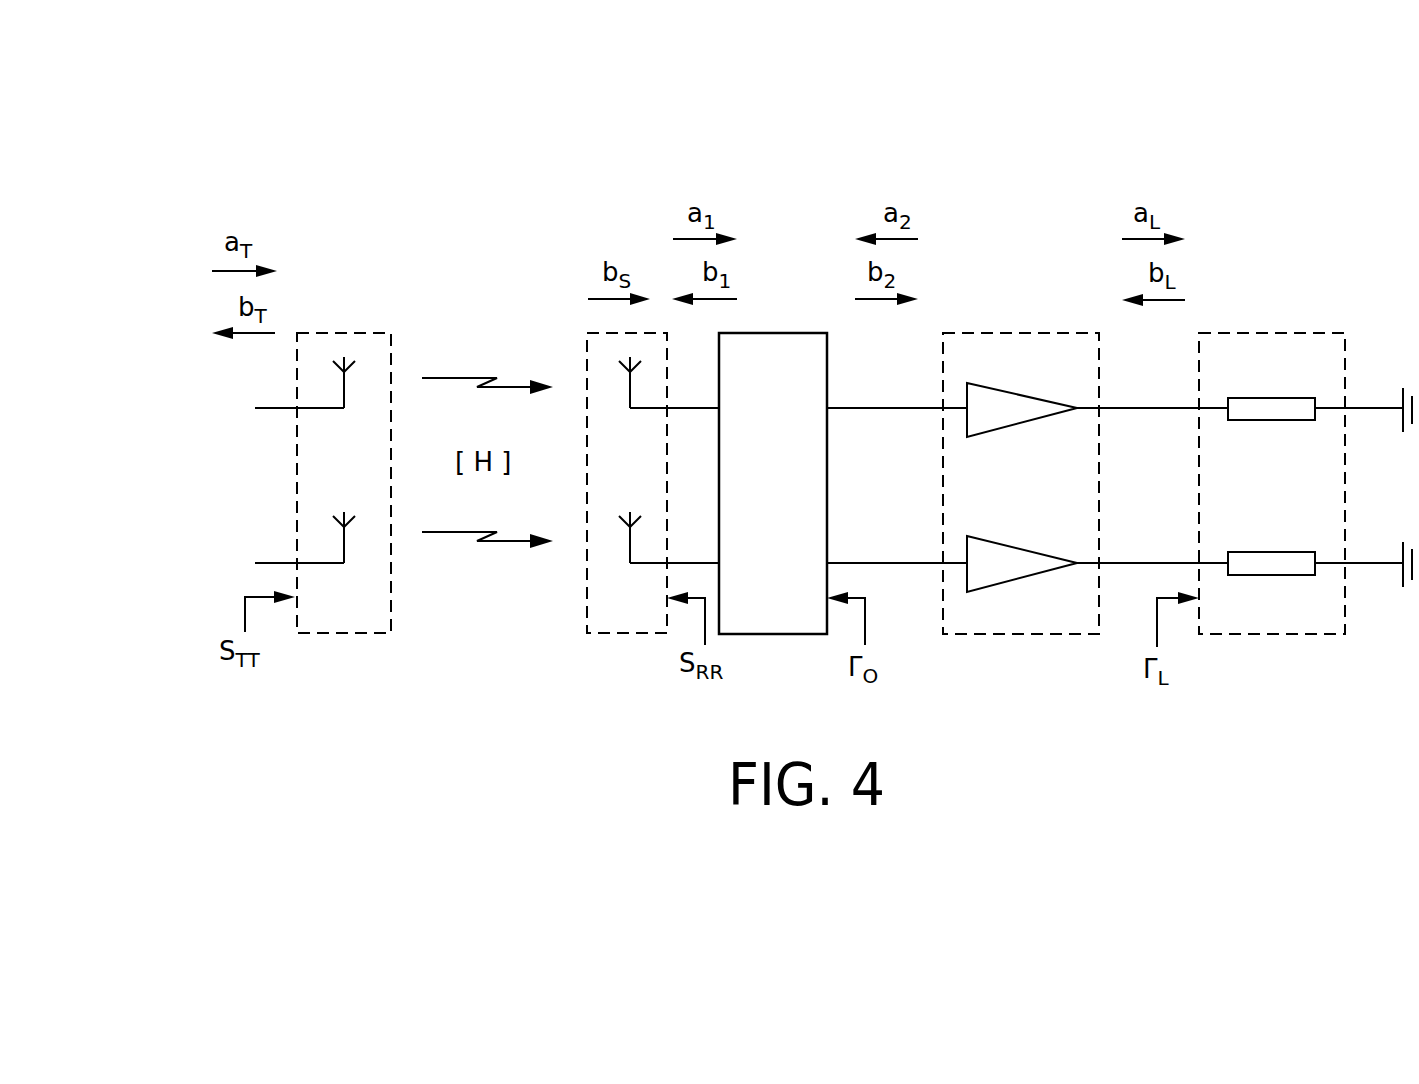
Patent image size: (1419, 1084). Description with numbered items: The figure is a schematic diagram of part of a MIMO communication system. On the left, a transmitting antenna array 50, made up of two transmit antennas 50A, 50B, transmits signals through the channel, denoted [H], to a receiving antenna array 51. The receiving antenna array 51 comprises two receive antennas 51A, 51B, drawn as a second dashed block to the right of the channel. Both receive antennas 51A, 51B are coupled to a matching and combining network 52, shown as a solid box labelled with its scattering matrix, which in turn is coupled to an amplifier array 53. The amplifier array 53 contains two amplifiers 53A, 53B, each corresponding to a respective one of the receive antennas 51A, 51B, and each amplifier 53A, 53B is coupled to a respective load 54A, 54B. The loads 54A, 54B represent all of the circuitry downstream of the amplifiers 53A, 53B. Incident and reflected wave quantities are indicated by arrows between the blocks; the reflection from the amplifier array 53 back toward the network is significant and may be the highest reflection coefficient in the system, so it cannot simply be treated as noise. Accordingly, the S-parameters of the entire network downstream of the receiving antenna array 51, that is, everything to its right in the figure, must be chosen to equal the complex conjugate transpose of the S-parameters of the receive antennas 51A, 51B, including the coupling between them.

The transmitting antenna array 50 is at (336, 633).
The transmit antenna 50A is at (345, 390).
The transmit antenna 50B is at (345, 548).
The receiving antenna array 51 is at (632, 633).
The receive antenna 51A is at (630, 392).
The receive antenna 51B is at (630, 548).
The matching and combining network 52 is at (773, 634).
The amplifier array 53 is at (1020, 634).
The amplifier 53A is at (1020, 393).
The amplifier 53B is at (1030, 577).
The load 54A is at (1270, 398).
The load 54B is at (1270, 577).